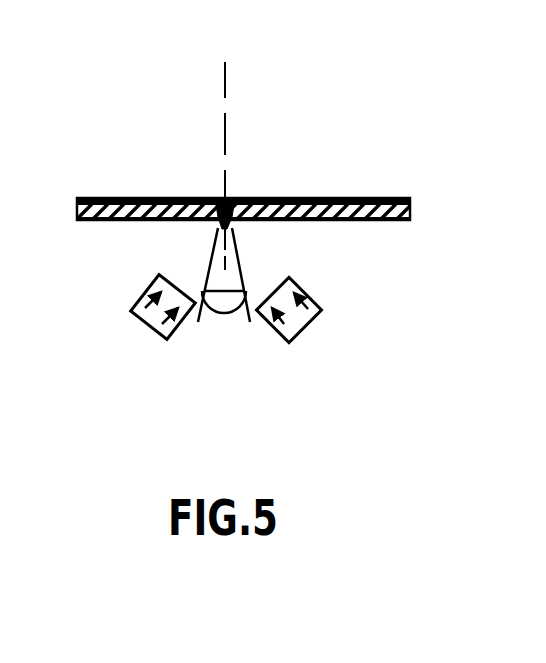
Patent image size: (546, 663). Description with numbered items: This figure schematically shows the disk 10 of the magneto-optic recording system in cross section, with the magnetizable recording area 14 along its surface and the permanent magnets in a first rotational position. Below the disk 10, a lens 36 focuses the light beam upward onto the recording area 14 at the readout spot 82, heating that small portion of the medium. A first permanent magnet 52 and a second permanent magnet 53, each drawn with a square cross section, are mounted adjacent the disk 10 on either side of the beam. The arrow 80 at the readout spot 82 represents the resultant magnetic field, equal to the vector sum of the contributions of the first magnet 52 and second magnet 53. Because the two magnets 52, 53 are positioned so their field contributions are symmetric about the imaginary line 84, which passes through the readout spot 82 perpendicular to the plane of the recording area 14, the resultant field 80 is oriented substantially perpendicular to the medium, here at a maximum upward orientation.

The disk 10 is at (410, 215).
The recording area 14 is at (398, 199).
The lens 36 is at (222, 300).
The first permanent magnet 52 is at (143, 297).
The second permanent magnet 53 is at (318, 300).
The arrow 80 is at (243, 222).
The readout spot 82 is at (217, 220).
The imaginary line 84 is at (226, 131).